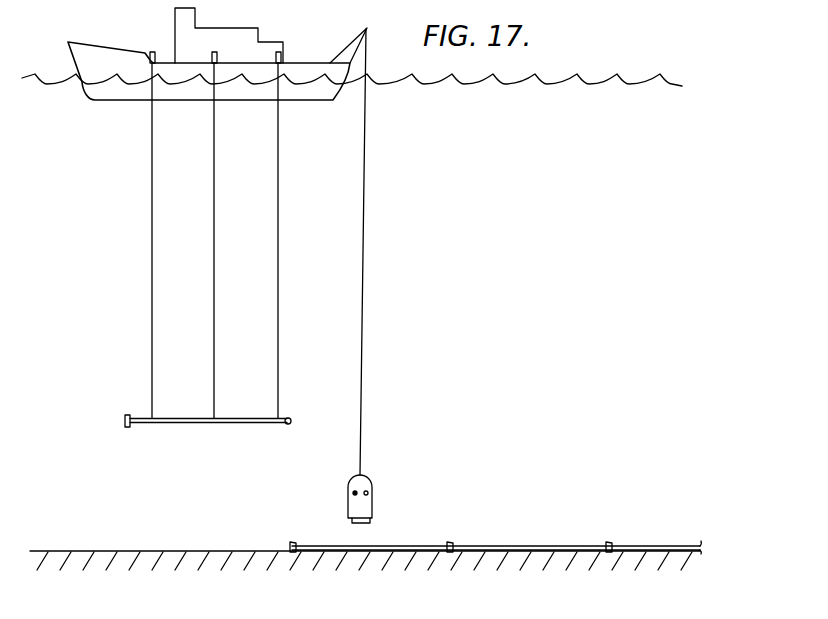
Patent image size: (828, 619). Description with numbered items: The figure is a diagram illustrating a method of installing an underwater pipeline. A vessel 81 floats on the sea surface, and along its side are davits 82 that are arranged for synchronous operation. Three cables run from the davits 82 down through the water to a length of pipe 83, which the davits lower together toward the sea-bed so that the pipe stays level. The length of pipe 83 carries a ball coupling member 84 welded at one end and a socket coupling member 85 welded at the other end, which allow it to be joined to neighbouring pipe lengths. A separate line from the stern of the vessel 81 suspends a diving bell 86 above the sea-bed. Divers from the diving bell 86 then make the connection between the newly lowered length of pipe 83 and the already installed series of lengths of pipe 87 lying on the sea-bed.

The vessel 81 is at (78, 50).
The davits 82 is at (157, 52).
The length of pipe 83 is at (170, 418).
The ball coupling member 84 is at (289, 419).
The socket coupling member 85 is at (133, 415).
The diving bell 86 is at (372, 502).
The installed series of lengths of pipe 87 is at (403, 545).